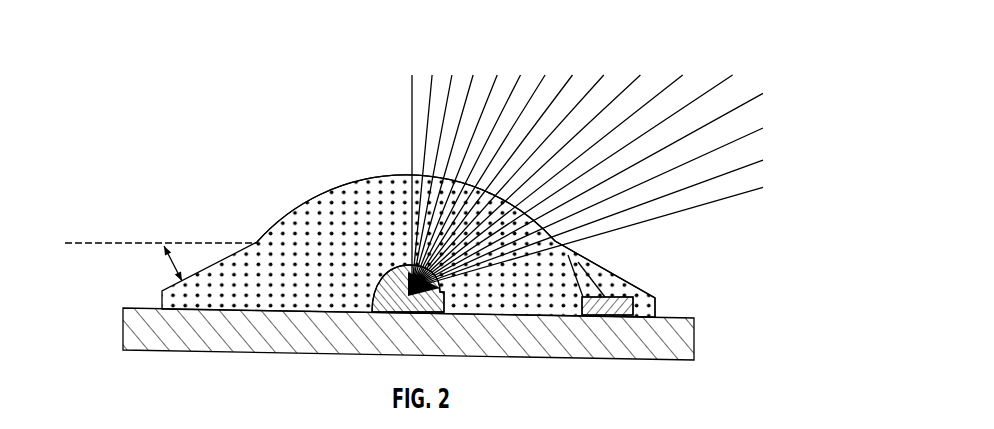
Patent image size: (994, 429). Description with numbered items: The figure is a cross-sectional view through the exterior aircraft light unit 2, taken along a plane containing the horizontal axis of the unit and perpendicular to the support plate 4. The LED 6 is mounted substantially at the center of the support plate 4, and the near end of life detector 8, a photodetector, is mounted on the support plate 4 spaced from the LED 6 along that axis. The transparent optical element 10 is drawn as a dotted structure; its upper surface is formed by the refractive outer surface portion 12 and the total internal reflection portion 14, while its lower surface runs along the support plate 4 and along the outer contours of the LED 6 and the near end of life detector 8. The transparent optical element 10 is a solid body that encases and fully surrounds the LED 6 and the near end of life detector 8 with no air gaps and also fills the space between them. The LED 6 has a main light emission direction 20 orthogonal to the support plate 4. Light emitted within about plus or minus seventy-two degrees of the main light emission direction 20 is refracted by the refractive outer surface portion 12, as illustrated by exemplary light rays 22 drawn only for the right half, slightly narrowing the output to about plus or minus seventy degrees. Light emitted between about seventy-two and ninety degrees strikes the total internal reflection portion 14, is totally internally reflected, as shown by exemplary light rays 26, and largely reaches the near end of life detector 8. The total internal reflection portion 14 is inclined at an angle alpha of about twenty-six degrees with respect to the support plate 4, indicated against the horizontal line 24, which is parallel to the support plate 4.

The exterior aircraft light unit 2 is at (342, 100).
The support plate 4 is at (153, 335).
The LED 6 is at (378, 292).
The near end of life detector 8 is at (605, 298).
The transparent optical element 10 is at (296, 254).
The refractive outer surface portion 12 is at (330, 186).
The total internal reflection portion 14 is at (637, 290).
The main light emission direction 20 is at (411, 120).
The exemplary light rays 22 is at (761, 128).
The horizontal line 24 is at (132, 242).
The exemplary light rays 26 is at (568, 267).